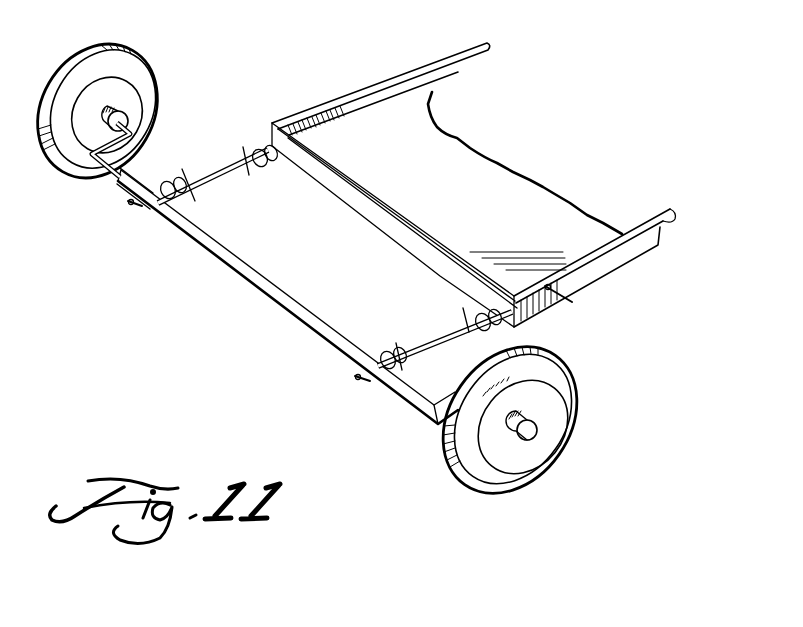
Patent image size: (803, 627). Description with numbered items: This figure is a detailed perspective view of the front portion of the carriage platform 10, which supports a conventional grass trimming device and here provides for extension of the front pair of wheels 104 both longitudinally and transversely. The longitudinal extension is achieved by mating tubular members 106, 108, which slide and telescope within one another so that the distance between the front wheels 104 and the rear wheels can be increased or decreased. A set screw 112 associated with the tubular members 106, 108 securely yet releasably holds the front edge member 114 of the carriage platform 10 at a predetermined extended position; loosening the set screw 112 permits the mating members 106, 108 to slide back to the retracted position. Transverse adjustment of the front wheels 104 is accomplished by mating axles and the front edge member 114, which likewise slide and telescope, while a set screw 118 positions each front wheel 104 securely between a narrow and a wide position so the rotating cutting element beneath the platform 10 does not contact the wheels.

The carriage platform 10 is at (407, 178).
The front pair of wheels 104 is at (135, 75).
The mating tubular member 106 is at (235, 158).
The mating tubular member 108 is at (348, 120).
The set screw 112 is at (562, 300).
The front edge member 114 is at (240, 272).
The set screw 118 is at (140, 206).